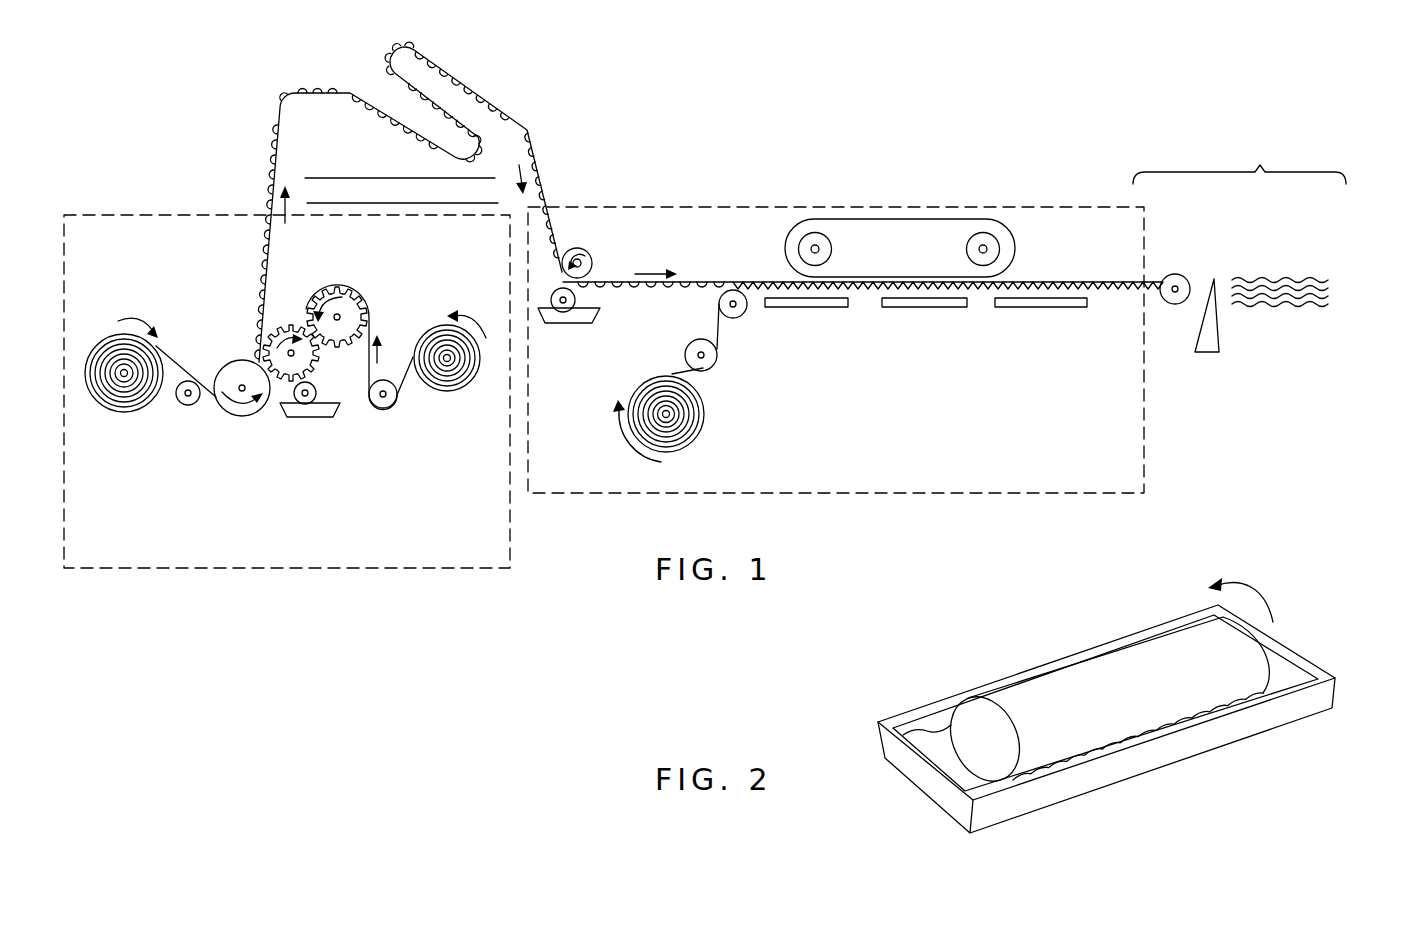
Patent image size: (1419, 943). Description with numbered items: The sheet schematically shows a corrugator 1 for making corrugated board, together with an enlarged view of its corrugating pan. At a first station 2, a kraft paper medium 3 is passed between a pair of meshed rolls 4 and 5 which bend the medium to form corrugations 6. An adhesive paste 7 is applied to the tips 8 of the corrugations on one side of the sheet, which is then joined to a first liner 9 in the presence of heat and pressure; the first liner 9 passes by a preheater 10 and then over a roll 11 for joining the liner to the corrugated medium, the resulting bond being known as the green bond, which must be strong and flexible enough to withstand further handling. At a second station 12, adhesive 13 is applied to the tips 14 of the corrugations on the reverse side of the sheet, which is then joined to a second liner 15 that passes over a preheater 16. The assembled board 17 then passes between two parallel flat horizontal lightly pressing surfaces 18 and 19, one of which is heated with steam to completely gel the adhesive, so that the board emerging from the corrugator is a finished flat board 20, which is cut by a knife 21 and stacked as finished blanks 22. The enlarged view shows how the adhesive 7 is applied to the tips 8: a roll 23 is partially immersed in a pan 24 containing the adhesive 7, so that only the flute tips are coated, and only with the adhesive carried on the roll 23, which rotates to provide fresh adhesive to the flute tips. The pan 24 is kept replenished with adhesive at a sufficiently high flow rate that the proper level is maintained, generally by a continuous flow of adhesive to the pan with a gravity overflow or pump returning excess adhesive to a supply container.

In FIG. 1, the corrugator 1 is at (565, 118).
In FIG. 1, the first station 2 is at (348, 570).
In FIG. 1, the kraft paper medium 3 is at (412, 353).
In FIG. 1, the meshed roll 4 is at (348, 310).
In FIG. 1, the meshed roll 5 is at (298, 362).
In FIG. 1, the corrugations 6 is at (323, 353).
In FIG. 1, the adhesive paste 7 is at (317, 420).
In FIG. 2, the adhesive paste 7 is at (958, 767).
In FIG. 1, the tips of the corrugations 8 is at (294, 388).
In FIG. 1, the first liner 9 is at (168, 357).
In FIG. 1, the preheater 10 is at (183, 401).
In FIG. 1, the roll 11 is at (212, 395).
In FIG. 1, the second station 12 is at (965, 493).
In FIG. 1, the adhesive 13 is at (570, 325).
In FIG. 1, the tips of the corrugations 14 is at (648, 288).
In FIG. 1, the second liner 15 is at (693, 373).
In FIG. 1, the preheater 16 is at (712, 352).
In FIG. 1, the assembled board 17 is at (750, 283).
In FIG. 1, the pressing surface 18 is at (918, 277).
In FIG. 1, the pressing surface 19 is at (878, 297).
In FIG. 1, the finished flat board 20 is at (1107, 283).
In FIG. 1, the knife 21 is at (1219, 336).
In FIG. 1, the finished blanks 22 is at (1300, 270).
In FIG. 2, the roll 23 is at (1262, 648).
In FIG. 2, the pan 24 is at (1297, 707).